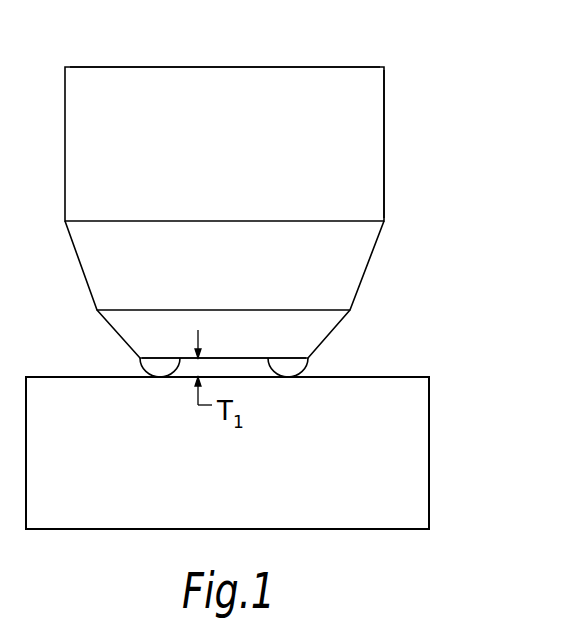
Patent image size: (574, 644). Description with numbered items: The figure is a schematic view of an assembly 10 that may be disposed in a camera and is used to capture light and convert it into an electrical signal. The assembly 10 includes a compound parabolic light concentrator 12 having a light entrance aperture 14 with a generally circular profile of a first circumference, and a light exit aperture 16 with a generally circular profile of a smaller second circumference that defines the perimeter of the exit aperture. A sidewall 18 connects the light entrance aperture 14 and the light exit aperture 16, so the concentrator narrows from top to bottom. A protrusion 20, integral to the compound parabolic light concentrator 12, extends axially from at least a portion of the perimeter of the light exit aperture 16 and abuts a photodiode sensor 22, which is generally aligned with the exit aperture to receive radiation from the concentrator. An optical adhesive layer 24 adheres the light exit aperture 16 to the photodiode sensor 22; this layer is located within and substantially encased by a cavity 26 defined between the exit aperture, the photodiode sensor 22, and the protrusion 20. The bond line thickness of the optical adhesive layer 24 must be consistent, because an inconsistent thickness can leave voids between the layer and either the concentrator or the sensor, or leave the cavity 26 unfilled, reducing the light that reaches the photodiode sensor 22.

The assembly 10 is at (472, 80).
The compound parabolic light concentrator 12 is at (65, 147).
The light entrance aperture 14 is at (226, 67).
The light exit aperture 16 is at (245, 357).
The sidewall 18 is at (384, 145).
The protrusion 20 is at (163, 370).
The photodiode sensor 22 is at (429, 423).
The optical adhesive layer 24 is at (258, 368).
The cavity 26 is at (195, 368).